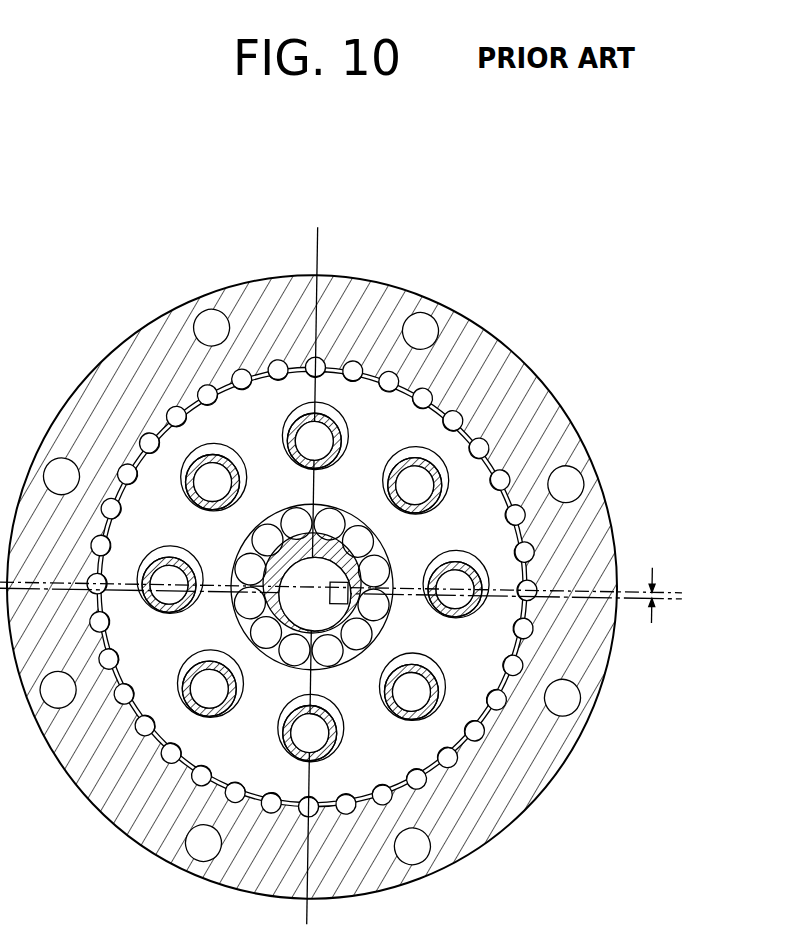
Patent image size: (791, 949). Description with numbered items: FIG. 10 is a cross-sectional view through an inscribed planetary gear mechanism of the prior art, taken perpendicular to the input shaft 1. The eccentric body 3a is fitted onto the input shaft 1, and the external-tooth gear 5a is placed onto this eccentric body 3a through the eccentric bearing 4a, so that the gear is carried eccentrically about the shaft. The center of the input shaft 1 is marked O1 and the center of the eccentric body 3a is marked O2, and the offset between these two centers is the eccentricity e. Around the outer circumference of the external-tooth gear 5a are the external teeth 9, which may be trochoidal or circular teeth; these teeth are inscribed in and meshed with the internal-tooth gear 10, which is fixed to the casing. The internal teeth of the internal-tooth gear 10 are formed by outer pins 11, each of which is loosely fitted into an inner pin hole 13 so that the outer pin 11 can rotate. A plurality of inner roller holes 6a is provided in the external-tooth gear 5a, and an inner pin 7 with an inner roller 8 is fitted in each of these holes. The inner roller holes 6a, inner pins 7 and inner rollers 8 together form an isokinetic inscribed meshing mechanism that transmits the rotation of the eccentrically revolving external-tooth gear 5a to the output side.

The center of housing / input shaft axis O1 is at (268, 588).
The center of eccentric body O2 is at (282, 532).
The input shaft 1 is at (300, 607).
The eccentric body 3a is at (367, 548).
The eccentric bearing 4a is at (445, 457).
The external-tooth gear 5a is at (405, 417).
The inner roller hole 6a is at (470, 560).
The inner pin 7 is at (407, 688).
The inner roller 8 is at (403, 712).
The external teeth 9 is at (447, 457).
The internal-tooth gear 10 is at (373, 303).
The outer pin 11 is at (255, 372).
The inner pin hole 13 is at (302, 357).
The eccentricity e is at (646, 607).